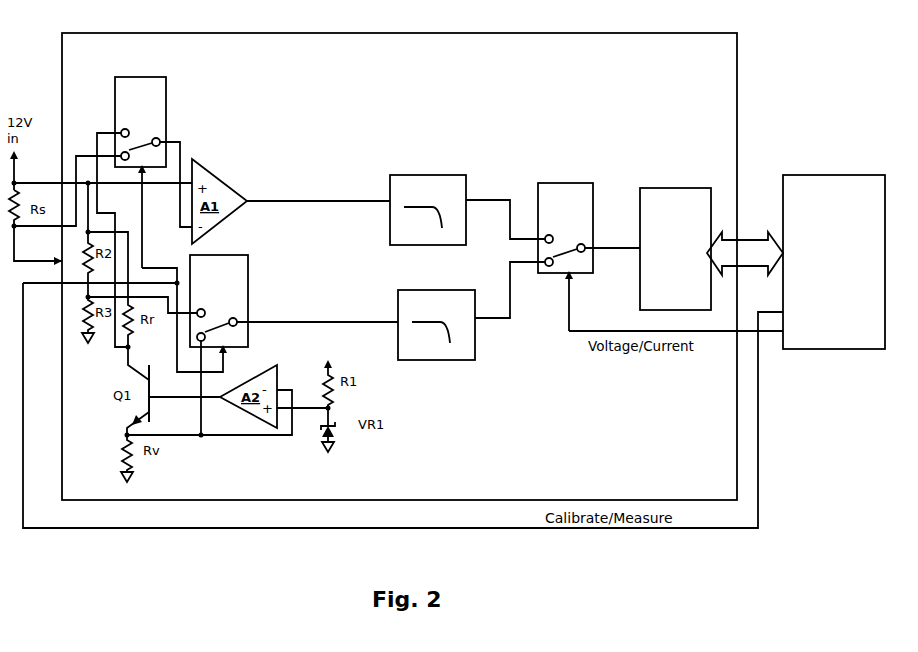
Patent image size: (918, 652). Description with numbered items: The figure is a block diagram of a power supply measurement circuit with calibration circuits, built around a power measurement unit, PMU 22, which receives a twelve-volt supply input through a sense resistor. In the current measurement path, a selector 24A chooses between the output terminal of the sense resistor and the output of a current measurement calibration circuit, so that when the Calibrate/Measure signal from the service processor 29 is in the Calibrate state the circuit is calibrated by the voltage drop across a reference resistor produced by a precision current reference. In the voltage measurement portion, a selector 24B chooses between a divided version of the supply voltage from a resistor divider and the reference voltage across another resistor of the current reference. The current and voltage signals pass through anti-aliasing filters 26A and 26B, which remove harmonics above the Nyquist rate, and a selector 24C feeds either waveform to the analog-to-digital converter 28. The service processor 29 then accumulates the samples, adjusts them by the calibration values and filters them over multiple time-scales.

The PMU 22 is at (399, 266).
The selector 24A is at (140, 122).
The selector 24B is at (219, 301).
The selector 24C is at (565, 228).
The anti-aliasing filter 26A is at (428, 210).
The anti-aliasing filter 26B is at (436, 325).
The analog-to-digital converter (ADC) 28 is at (675, 249).
The service processor 29 is at (834, 262).